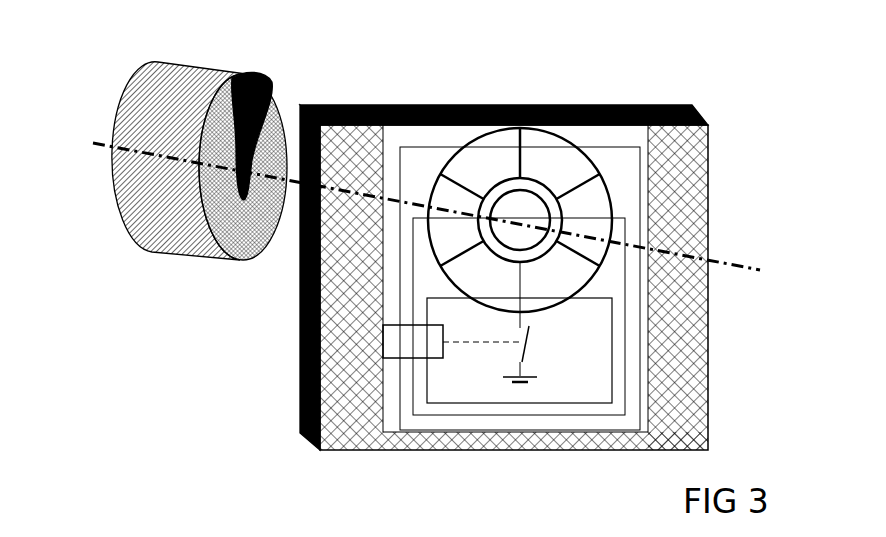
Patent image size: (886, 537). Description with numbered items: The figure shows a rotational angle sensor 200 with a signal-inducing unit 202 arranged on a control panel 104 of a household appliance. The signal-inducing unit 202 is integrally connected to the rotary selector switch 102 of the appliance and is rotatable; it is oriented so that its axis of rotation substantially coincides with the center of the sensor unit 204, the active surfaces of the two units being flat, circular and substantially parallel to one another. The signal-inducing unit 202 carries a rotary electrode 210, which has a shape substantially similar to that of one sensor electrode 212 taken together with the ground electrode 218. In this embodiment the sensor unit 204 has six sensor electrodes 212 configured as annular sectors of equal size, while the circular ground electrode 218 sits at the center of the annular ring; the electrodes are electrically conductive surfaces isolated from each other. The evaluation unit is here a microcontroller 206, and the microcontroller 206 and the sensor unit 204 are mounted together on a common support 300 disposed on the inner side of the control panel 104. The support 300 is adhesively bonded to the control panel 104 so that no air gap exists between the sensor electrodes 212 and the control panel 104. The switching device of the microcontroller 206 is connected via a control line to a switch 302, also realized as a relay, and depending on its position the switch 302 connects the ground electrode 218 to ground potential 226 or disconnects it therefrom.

The rotary selector switch 102 is at (127, 105).
The signal-inducing unit 202 is at (280, 105).
The rotary electrode 210 is at (248, 75).
The rotational angle sensor 200 is at (453, 88).
The control panel 104 is at (675, 128).
The support 300 is at (400, 127).
The sensor unit 204 is at (563, 147).
The sensor electrode 212 is at (520, 228).
The ground electrode 218 is at (520, 220).
The microcontroller 206 is at (383, 341).
The switch 302 is at (532, 335).
The ground potential 226 is at (520, 387).